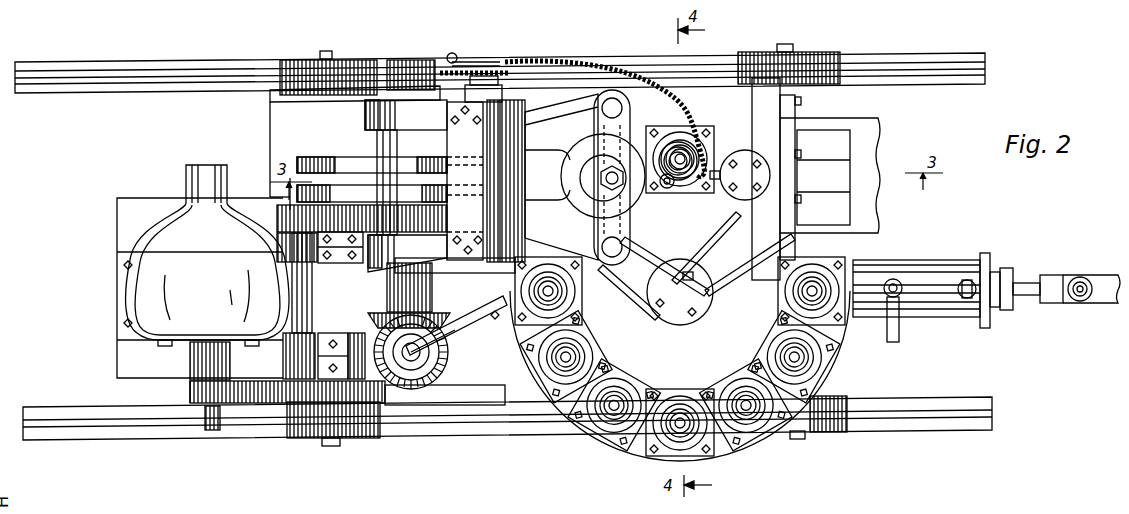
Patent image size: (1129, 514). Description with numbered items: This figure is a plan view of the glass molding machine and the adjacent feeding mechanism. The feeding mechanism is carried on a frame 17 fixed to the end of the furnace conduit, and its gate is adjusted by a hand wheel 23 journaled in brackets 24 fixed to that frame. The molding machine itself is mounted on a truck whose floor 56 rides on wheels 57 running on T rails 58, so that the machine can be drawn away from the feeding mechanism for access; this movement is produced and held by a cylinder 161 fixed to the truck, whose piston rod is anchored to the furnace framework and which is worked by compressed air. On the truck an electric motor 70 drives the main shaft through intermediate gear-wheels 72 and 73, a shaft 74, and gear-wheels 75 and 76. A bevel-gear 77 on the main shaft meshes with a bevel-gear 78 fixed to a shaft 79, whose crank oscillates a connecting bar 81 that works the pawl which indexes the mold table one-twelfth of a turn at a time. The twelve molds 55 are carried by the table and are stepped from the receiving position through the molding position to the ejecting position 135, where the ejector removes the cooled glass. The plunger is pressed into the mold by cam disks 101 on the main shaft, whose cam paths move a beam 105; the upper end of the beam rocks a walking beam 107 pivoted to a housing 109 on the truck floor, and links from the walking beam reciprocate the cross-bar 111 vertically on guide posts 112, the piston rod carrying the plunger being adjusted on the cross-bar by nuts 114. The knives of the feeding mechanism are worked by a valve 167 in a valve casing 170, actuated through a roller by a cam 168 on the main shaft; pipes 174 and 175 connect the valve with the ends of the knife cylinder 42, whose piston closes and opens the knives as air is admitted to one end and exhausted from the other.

The frame 17 is at (780, 110).
The hand wheel 23 is at (712, 293).
The brackets 24 is at (741, 240).
The cylinder 42 is at (721, 217).
The mold 55 is at (590, 348).
The floor 56 is at (505, 392).
The wheels 57 is at (312, 43).
The T rails 58 is at (222, 43).
The electric motor 70 is at (148, 282).
The gear-wheel 72 is at (190, 390).
The gear-wheel 73 is at (250, 382).
The shaft 74 is at (310, 305).
The gear-wheel 75 is at (278, 218).
The gear-wheel 76 is at (348, 207).
The bevel-gear 77 is at (440, 310).
The bevel-gear 78 is at (447, 358).
The shaft 79 is at (418, 349).
The connecting bar 81 is at (470, 308).
The cam disks 101 is at (297, 197).
The beam 105 is at (372, 178).
The walking beam 107 is at (570, 212).
The housing 109 is at (526, 116).
The cross-bar 111 is at (600, 125).
The guide posts 112 is at (614, 108).
The nuts 114 is at (640, 200).
The position 135 is at (660, 458).
The cylinder 161 is at (915, 310).
The valve 167 is at (440, 63).
The cam 168 is at (398, 82).
The valve casing 170 is at (467, 92).
The pipe 174 is at (540, 72).
The pipe 175 is at (600, 68).